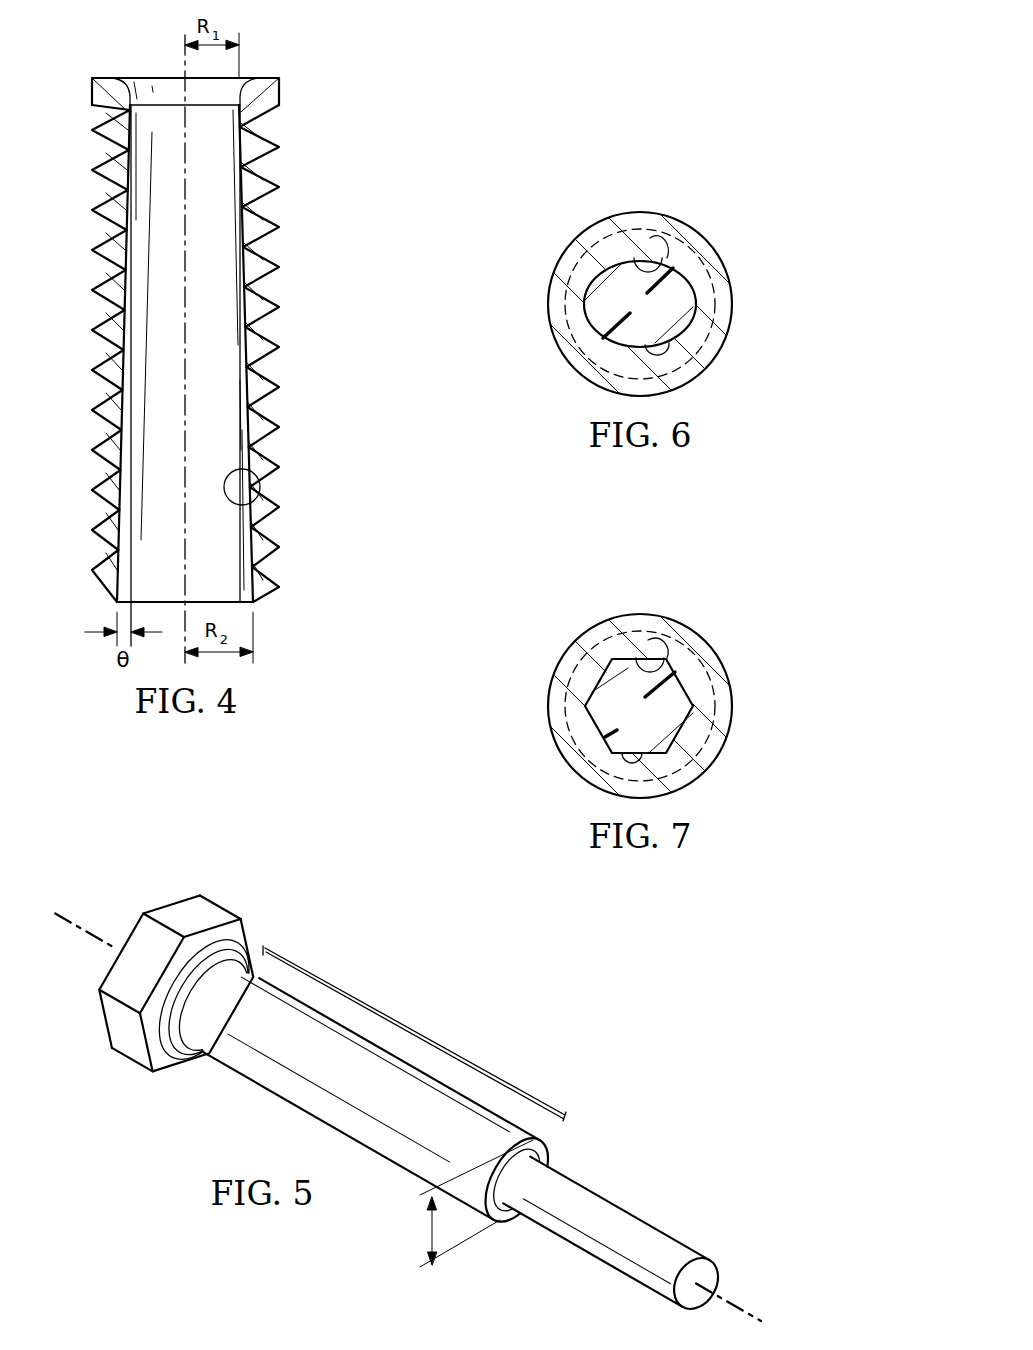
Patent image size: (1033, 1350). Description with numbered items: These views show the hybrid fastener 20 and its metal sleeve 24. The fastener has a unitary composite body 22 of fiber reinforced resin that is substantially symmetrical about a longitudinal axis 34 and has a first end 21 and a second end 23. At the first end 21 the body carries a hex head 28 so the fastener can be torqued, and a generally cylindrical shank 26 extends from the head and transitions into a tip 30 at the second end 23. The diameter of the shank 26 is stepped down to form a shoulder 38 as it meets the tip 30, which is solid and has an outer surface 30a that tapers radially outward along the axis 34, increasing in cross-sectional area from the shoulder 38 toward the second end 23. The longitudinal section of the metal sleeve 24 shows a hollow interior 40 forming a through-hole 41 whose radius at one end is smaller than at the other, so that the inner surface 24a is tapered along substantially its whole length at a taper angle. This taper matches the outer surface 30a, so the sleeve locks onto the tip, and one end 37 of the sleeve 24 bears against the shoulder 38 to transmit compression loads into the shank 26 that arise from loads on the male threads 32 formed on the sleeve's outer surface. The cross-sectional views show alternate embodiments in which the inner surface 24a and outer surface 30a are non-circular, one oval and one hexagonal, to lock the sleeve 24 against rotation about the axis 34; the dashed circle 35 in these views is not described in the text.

In FIG. 6, the hybrid fastener 20 is at (637, 278).
In FIG. 7, the hybrid fastener 20 is at (638, 679).
In FIG. 5, the hybrid fastener 20 is at (413, 1109).
In FIG. 5, the first end 21 is at (113, 1078).
In FIG. 6, the composite body 22 is at (573, 327).
In FIG. 7, the composite body 22 is at (573, 730).
In FIG. 5, the composite body 22 is at (290, 1116).
In FIG. 4, the second end 23 is at (78, 624).
In FIG. 5, the second end 23 is at (726, 1209).
In FIG. 4, the metal sleeve 24 is at (207, 315).
In FIG. 6, the metal sleeve 24 is at (703, 217).
In FIG. 7, the metal sleeve 24 is at (703, 623).
In FIG. 4, the inner surface 24a is at (262, 488).
In FIG. 6, the inner surface 24a is at (650, 238).
In FIG. 7, the inner surface 24a is at (648, 640).
In FIG. 5, the shank 26 is at (416, 1032).
In FIG. 5, the head 28 is at (102, 1022).
In FIG. 6, the tip 30 is at (696, 294).
In FIG. 7, the tip 30 is at (692, 694).
In FIG. 5, the tip 30 is at (593, 1257).
In FIG. 6, the outer surface 30a is at (660, 356).
In FIG. 7, the outer surface 30a is at (632, 762).
In FIG. 5, the outer surface 30a is at (622, 1207).
In FIG. 4, the male threads 32 is at (100, 379).
In FIG. 6, the male threads 32 is at (548, 305).
In FIG. 7, the male threads 32 is at (548, 708).
In FIG. 4, the longitudinal axis 34 is at (187, 515).
In FIG. 5, the longitudinal axis 34 is at (65, 912).
In FIG. 6, the thread root circle 35 is at (599, 242).
In FIG. 4, the end of the metal sleeve 37 is at (98, 77).
In FIG. 5, the shoulder 38 is at (540, 1143).
In FIG. 4, the hollow interior 40 is at (250, 413).
In FIG. 4, the through-hole 41 is at (232, 355).